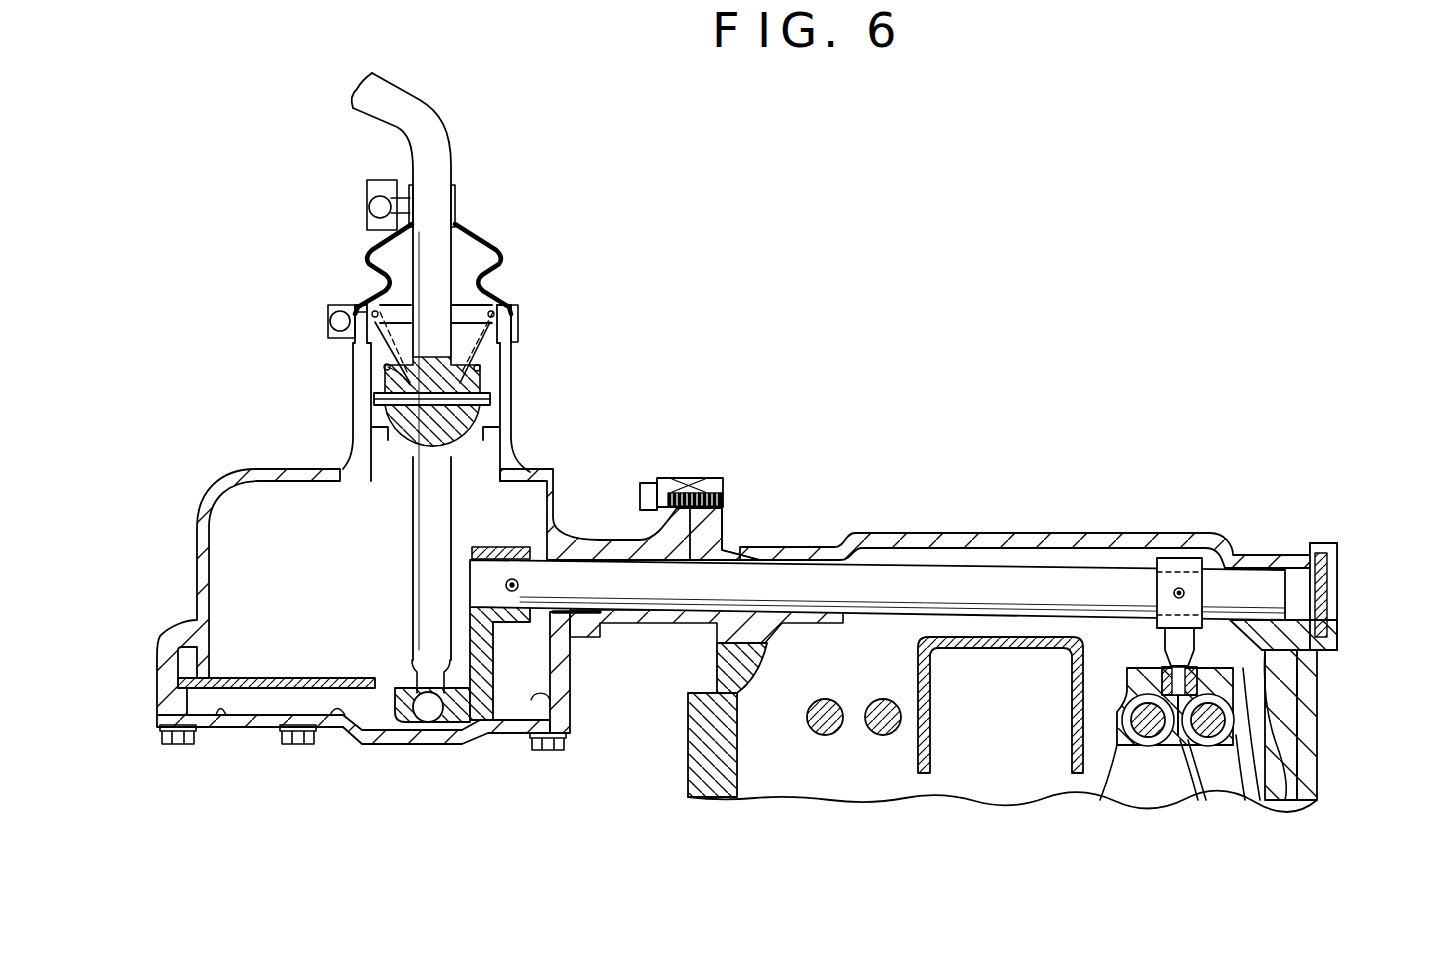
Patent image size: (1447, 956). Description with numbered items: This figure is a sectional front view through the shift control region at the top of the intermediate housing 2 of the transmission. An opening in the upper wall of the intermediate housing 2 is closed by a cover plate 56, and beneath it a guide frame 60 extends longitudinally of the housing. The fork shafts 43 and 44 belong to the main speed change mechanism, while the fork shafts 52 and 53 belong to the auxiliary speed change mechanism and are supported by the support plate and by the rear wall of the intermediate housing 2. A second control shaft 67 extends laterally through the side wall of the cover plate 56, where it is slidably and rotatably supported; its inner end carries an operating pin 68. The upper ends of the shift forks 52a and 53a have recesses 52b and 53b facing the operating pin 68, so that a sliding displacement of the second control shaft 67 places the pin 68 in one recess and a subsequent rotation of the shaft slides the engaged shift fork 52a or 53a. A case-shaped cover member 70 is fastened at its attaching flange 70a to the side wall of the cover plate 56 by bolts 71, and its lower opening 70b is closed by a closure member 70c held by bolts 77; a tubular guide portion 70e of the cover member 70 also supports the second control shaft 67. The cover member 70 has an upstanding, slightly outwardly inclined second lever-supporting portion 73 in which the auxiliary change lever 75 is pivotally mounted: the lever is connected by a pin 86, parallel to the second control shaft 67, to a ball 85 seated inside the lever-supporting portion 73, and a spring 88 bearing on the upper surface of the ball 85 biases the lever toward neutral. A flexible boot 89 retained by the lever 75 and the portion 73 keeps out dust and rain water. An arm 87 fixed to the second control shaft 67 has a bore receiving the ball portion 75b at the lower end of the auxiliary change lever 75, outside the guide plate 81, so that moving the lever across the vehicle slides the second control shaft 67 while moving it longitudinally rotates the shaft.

The intermediate housing 2 is at (1310, 765).
The fork shaft 43 is at (823, 737).
The fork shaft 44 is at (883, 737).
The fork shaft 52 is at (1120, 750).
The shift fork 52a is at (1157, 787).
The recess 52b is at (1167, 675).
The fork shaft 53 is at (1297, 718).
The shift fork 53a is at (1238, 780).
The recess 53b is at (1262, 680).
The cover plate 56 is at (1048, 535).
The guide frame 60 is at (980, 648).
The second control shaft 67 is at (758, 587).
The operating pin 68 is at (1195, 650).
The cover member 70 is at (553, 518).
The attaching flange 70a is at (675, 478).
The opening 70b is at (570, 707).
The closure member 70c is at (387, 747).
The tubular guide portion 70e is at (553, 613).
The bolts 71 is at (702, 497).
The second lever-supporting portion 73 is at (353, 397).
The auxiliary change lever 75 is at (440, 163).
The ball portion 75b is at (432, 712).
The bolts 77 is at (190, 745).
The guide plate 81 is at (280, 678).
The ball 85 is at (472, 418).
The pin 86 is at (483, 392).
The arm 87 is at (487, 640).
The spring 88 is at (383, 367).
The boot 89 is at (497, 252).